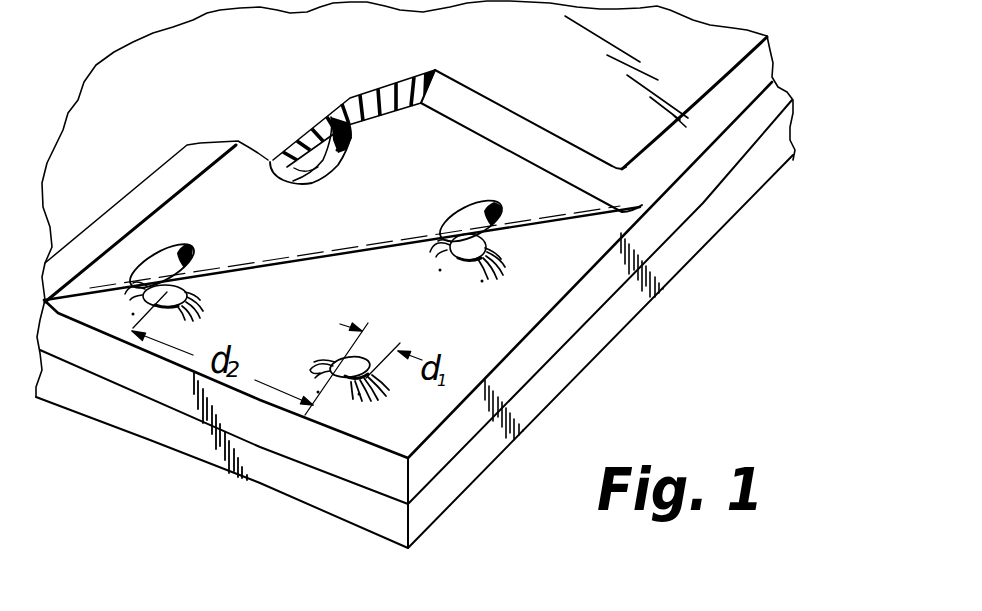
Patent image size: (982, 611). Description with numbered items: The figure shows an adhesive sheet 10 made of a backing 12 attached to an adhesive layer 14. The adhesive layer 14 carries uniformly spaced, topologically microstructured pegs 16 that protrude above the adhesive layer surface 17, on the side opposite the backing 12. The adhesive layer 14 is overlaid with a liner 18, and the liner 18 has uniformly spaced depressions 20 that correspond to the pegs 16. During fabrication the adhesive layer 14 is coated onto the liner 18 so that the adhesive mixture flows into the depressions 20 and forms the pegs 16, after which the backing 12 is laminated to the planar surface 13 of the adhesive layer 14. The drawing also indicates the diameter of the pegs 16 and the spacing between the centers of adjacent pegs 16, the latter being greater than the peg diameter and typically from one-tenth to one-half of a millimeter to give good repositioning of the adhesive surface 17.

The adhesive sheet 10 is at (446, 306).
The backing 12 is at (447, 493).
The planar surface 13 is at (703, 203).
The adhesive layer 14 is at (776, 104).
The pegs 16 is at (370, 374).
The adhesive layer surface 17 is at (480, 345).
The liner 18 is at (547, 82).
The depressions 20 is at (195, 257).